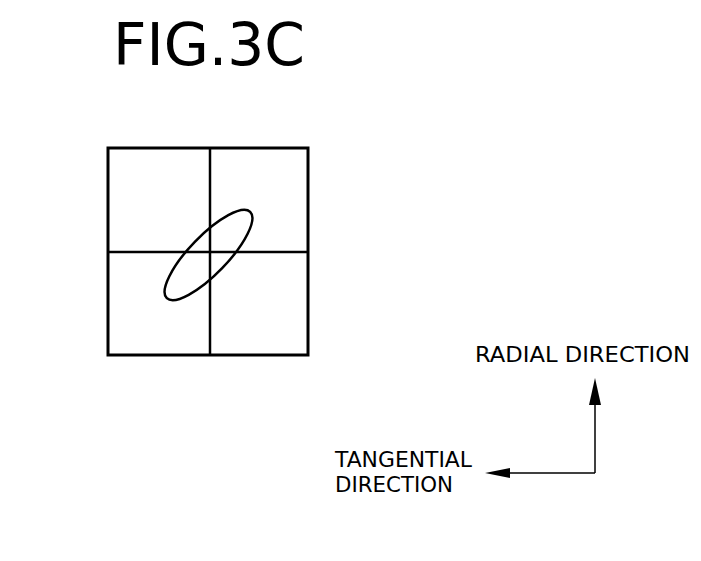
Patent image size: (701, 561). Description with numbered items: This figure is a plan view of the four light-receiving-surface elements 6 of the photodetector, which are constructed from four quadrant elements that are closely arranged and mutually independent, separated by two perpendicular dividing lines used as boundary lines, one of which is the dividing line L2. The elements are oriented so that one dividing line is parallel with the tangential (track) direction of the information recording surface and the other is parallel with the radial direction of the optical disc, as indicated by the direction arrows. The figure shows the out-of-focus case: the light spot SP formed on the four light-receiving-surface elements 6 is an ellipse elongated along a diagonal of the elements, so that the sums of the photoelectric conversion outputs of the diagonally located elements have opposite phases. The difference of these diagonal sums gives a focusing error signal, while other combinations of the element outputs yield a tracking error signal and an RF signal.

The four light-receiving-surface elements 6 is at (232, 356).
The dividing line L2 is at (292, 252).
The light spot SP is at (197, 237).